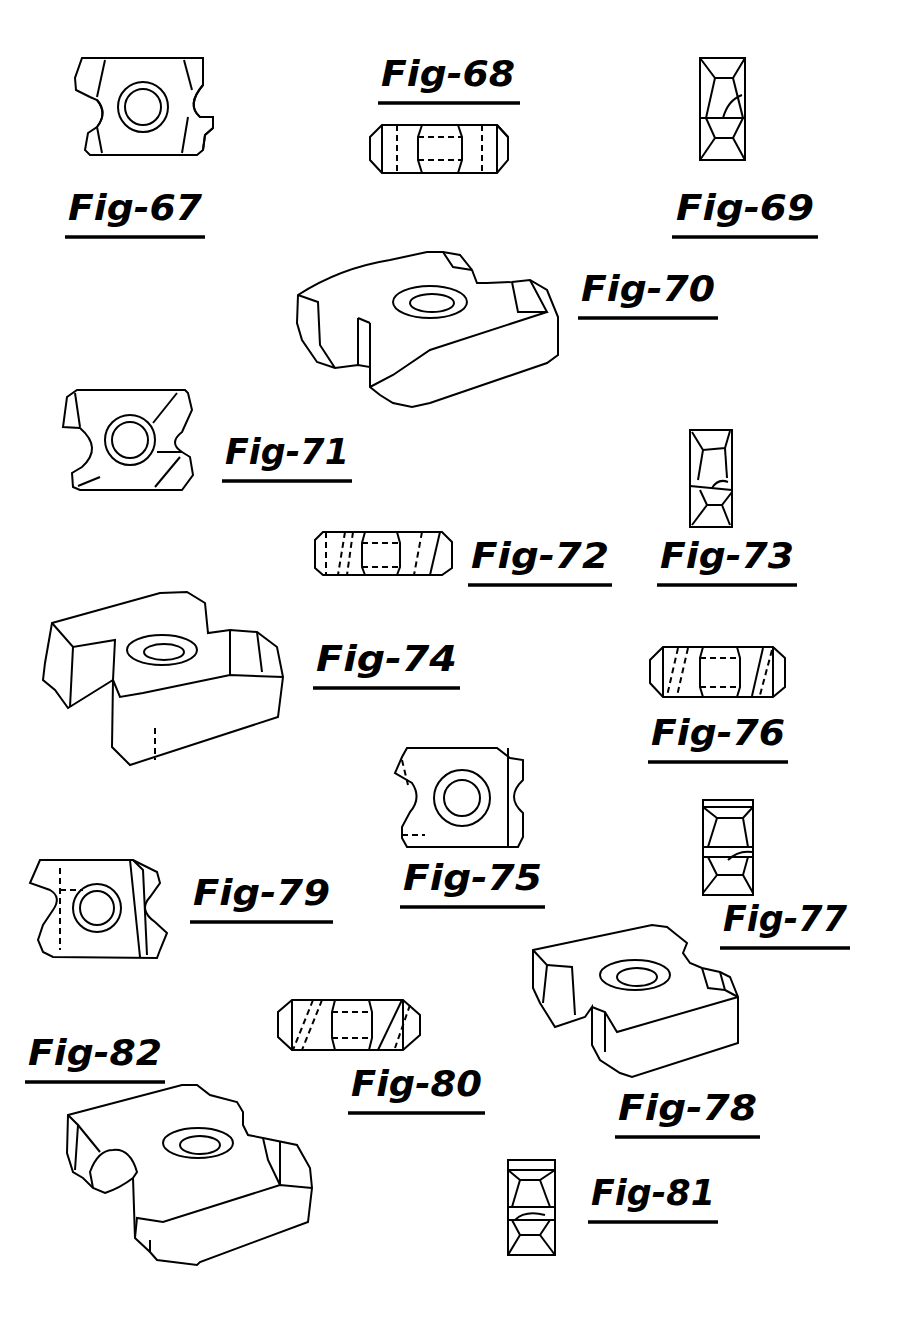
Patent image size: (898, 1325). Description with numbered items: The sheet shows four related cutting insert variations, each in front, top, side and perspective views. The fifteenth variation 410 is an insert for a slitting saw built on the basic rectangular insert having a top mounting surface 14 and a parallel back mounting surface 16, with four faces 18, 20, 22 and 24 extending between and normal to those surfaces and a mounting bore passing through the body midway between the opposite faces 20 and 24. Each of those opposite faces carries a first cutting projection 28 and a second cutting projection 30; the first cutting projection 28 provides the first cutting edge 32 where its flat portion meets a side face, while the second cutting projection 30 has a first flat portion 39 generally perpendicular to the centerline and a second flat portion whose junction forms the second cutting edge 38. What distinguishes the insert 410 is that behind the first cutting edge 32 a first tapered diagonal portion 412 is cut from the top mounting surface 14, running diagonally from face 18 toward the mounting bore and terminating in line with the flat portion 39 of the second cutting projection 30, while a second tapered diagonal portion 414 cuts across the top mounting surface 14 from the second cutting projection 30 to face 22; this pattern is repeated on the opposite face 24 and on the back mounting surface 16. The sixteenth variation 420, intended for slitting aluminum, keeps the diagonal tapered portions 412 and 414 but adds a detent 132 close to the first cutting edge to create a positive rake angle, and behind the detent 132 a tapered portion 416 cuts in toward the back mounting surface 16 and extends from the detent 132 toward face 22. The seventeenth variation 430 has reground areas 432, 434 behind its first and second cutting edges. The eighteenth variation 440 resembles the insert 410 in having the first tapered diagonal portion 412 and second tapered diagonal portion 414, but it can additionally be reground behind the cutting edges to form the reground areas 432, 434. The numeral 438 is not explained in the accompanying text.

In FIG. 68, the top mounting surface 14 is at (430, 124).
In FIG. 69, the top mounting surface 14 is at (700, 122).
In FIG. 70, the top mounting surface 14 is at (385, 278).
In FIG. 71, the top mounting surface 14 is at (115, 403).
In FIG. 72, the top mounting surface 14 is at (377, 532).
In FIG. 73, the top mounting surface 14 is at (690, 467).
In FIG. 74, the top mounting surface 14 is at (110, 620).
In FIG. 76, the top mounting surface 14 is at (725, 645).
In FIG. 77, the top mounting surface 14 is at (707, 853).
In FIG. 82, the top mounting surface 14 is at (120, 1123).
In FIG. 68, the back mounting surface 16 is at (433, 173).
In FIG. 69, the back mounting surface 16 is at (747, 120).
In FIG. 72, the back mounting surface 16 is at (378, 575).
In FIG. 73, the back mounting surface 16 is at (733, 477).
In FIG. 76, the back mounting surface 16 is at (725, 697).
In FIG. 77, the back mounting surface 16 is at (755, 835).
In FIG. 67, the face 18 is at (117, 58).
In FIG. 75, the face 18 is at (455, 748).
In FIG. 79, the face 18 is at (98, 858).
In FIG. 67, the face 20 is at (216, 122).
In FIG. 71, the face 20 is at (182, 443).
In FIG. 75, the face 20 is at (522, 798).
In FIG. 67, the face 22 is at (143, 157).
In FIG. 70, the face 22 is at (497, 363).
In FIG. 74, the face 22 is at (253, 710).
In FIG. 75, the face 22 is at (487, 847).
In FIG. 79, the face 22 is at (90, 958).
In FIG. 67, the face 24 is at (88, 108).
In FIG. 70, the face 24 is at (357, 370).
In FIG. 71, the face 24 is at (80, 445).
In FIG. 74, the face 24 is at (103, 702).
In FIG. 75, the face 24 is at (408, 797).
In FIG. 74, the first cutting projection 28 is at (203, 602).
In FIG. 67, the second cutting projection 30 is at (210, 137).
In FIG. 68, the second cutting projection 30 is at (370, 147).
In FIG. 70, the second cutting projection 30 is at (548, 307).
In FIG. 72, the second cutting projection 30 is at (452, 567).
In FIG. 73, the second cutting projection 30 is at (707, 498).
In FIG. 74, the second cutting projection 30 is at (263, 640).
In FIG. 67, the first cutting edge 32 is at (203, 60).
In FIG. 68, the first cutting edge 32 is at (507, 147).
In FIG. 69, the first cutting edge 32 is at (718, 58).
In FIG. 70, the first cutting edge 32 is at (467, 262).
In FIG. 72, the first cutting edge 32 is at (450, 550).
In FIG. 73, the first cutting edge 32 is at (720, 430).
In FIG. 67, the second cutting edge 38 is at (216, 125).
In FIG. 69, the second cutting edge 38 is at (747, 92).
In FIG. 73, the second cutting edge 38 is at (723, 490).
In FIG. 67, the first flat portion 39 is at (200, 110).
In FIG. 71, the detent 132 is at (173, 393).
In FIG. 74, the detent 132 is at (175, 592).
In FIG. 67, the fifteenth variation of insert 410 is at (210, 53).
In FIG. 68, the fifteenth variation of insert 410 is at (368, 162).
In FIG. 70, the fifteenth variation of insert 410 is at (292, 295).
In FIG. 67, the first tapered diagonal portion 412 is at (183, 70).
In FIG. 70, the first tapered diagonal portion 412 is at (453, 265).
In FIG. 71, the first tapered diagonal portion 412 is at (170, 413).
In FIG. 74, the first tapered diagonal portion 412 is at (190, 617).
In FIG. 67, the second tapered diagonal portion 414 is at (188, 147).
In FIG. 70, the second tapered diagonal portion 414 is at (317, 300).
In FIG. 71, the second tapered diagonal portion 414 is at (177, 477).
In FIG. 74, the second tapered diagonal portion 414 is at (283, 680).
In FIG. 74, the tapered portion 416 is at (173, 730).
In FIG. 71, the sixteenth variation of insert 420 is at (97, 383).
In FIG. 72, the sixteenth variation of insert 420 is at (407, 528).
In FIG. 73, the sixteenth variation of insert 420 is at (687, 450).
In FIG. 74, the sixteenth variation of insert 420 is at (83, 605).
In FIG. 75, the seventeenth variation of insert 430 is at (478, 742).
In FIG. 76, the seventeenth variation of insert 430 is at (695, 642).
In FIG. 77, the seventeenth variation of insert 430 is at (698, 808).
In FIG. 75, the reground area 432 is at (512, 755).
In FIG. 76, the reground area 432 is at (787, 662).
In FIG. 77, the reground area 432 is at (733, 802).
In FIG. 78, the reground area 432 is at (687, 937).
In FIG. 79, the reground area 432 is at (143, 867).
In FIG. 80, the reground area 432 is at (418, 1023).
In FIG. 81, the reground area 432 is at (533, 1160).
In FIG. 82, the reground area 432 is at (147, 1262).
In FIG. 78, the reground area 434 is at (737, 985).
In FIG. 79, the reground area 434 is at (167, 923).
In FIG. 81, the reground area 434 is at (522, 1218).
In FIG. 75, the curved face 438 is at (527, 812).
In FIG. 76, the curved face 438 is at (790, 677).
In FIG. 77, the curved face 438 is at (753, 857).
In FIG. 82, the curved face 438 is at (90, 1183).
In FIG. 78, the eighteenth variation of insert 440 is at (635, 1001).
In FIG. 79, the eighteenth variation of insert 440 is at (158, 964).
In FIG. 80, the eighteenth variation of insert 440 is at (370, 997).
In FIG. 81, the eighteenth variation of insert 440 is at (568, 1198).
In FIG. 82, the eighteenth variation of insert 440 is at (200, 1082).